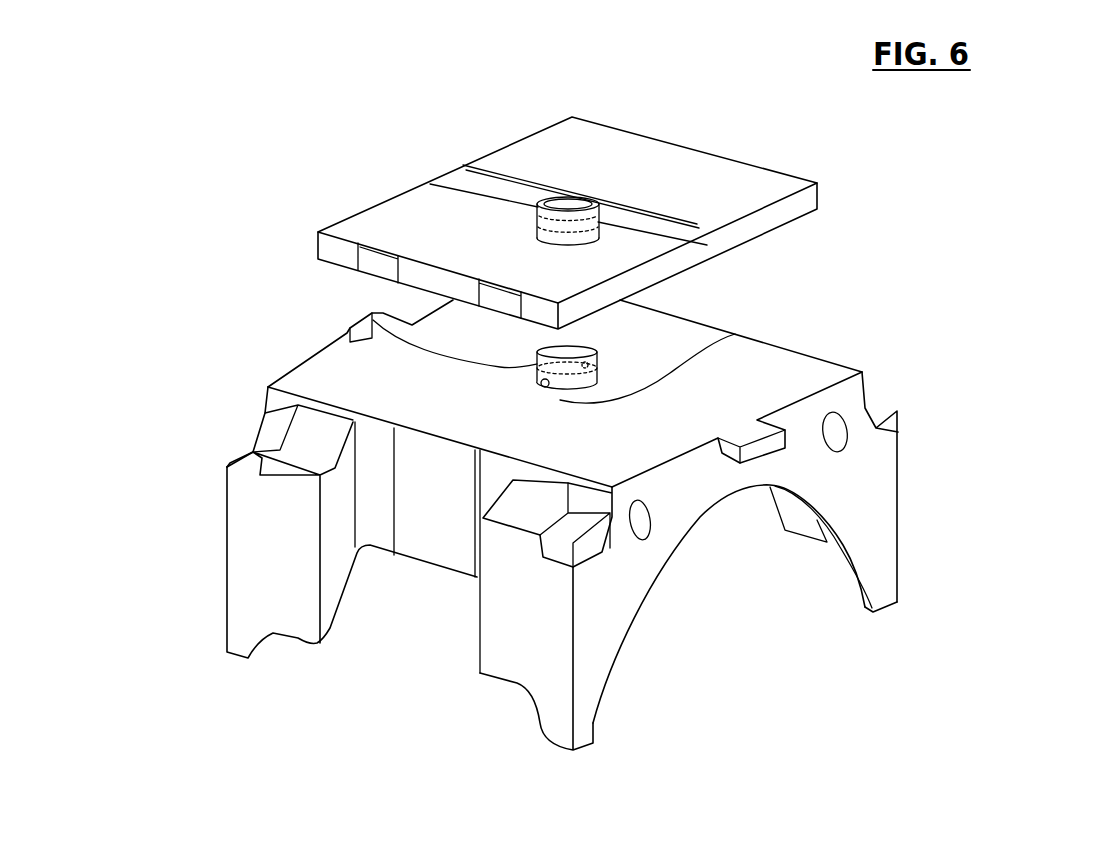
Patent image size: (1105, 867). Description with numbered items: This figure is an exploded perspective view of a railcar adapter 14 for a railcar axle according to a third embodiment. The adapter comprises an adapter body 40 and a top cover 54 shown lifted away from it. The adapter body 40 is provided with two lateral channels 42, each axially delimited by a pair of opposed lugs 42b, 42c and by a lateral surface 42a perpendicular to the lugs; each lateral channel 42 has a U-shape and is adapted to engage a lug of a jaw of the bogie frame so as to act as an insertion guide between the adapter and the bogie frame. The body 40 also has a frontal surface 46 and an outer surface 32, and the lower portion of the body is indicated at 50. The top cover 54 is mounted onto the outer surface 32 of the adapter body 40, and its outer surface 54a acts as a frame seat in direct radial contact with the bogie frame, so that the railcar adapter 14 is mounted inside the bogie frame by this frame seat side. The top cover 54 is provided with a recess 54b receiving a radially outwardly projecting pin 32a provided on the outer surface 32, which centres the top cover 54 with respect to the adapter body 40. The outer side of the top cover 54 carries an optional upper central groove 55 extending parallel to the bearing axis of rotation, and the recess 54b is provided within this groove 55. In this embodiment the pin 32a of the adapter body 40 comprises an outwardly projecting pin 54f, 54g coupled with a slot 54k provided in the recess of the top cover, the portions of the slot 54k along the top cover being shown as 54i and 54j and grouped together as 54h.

The railcar adapter 14 is at (247, 220).
The outer surface 32 is at (317, 383).
The pin 32a is at (367, 317).
The adapter body 40 is at (895, 430).
The lateral channel 42 is at (488, 798).
The lateral surface 42a is at (432, 555).
The lug 42b is at (300, 633).
The lug 42c is at (495, 663).
The frontal surface 46 is at (845, 494).
The lower edge of side wall 50 is at (888, 589).
The top cover 54 is at (393, 207).
The outer surface 54a is at (713, 160).
The recess 54b is at (600, 200).
The outwardly projecting pin 54f is at (597, 368).
The outwardly projecting pin 54g is at (597, 363).
The coil assembly 54h is at (445, 95).
The slot portion 54i is at (545, 198).
The slot portion 54j is at (580, 200).
The slot 54k is at (584, 200).
The upper central groove 55 is at (470, 178).